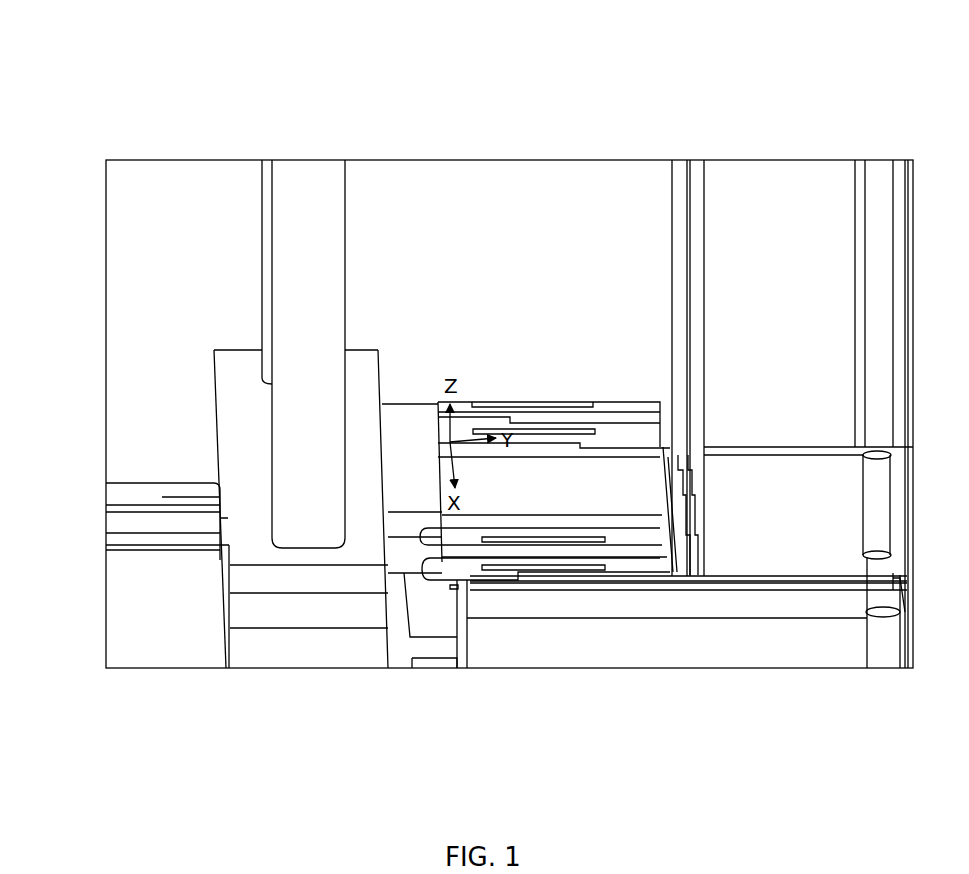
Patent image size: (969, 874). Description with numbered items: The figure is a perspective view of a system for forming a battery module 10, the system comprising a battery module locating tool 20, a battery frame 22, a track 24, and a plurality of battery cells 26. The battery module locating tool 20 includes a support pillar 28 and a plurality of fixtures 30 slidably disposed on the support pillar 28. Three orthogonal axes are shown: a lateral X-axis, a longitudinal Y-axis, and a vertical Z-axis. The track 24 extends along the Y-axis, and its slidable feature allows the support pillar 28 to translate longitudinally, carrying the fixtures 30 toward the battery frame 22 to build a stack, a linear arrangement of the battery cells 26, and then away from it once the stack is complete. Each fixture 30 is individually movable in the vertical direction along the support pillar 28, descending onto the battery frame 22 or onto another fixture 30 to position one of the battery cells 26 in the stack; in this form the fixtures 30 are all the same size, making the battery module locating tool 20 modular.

The battery module 10 is at (757, 46).
The battery module locating tool 20 is at (290, 153).
The battery frame 22 is at (672, 178).
The track 24 is at (117, 571).
The battery cells 26 is at (625, 418).
The support pillar 28 is at (286, 208).
The fixtures 30 is at (240, 460).